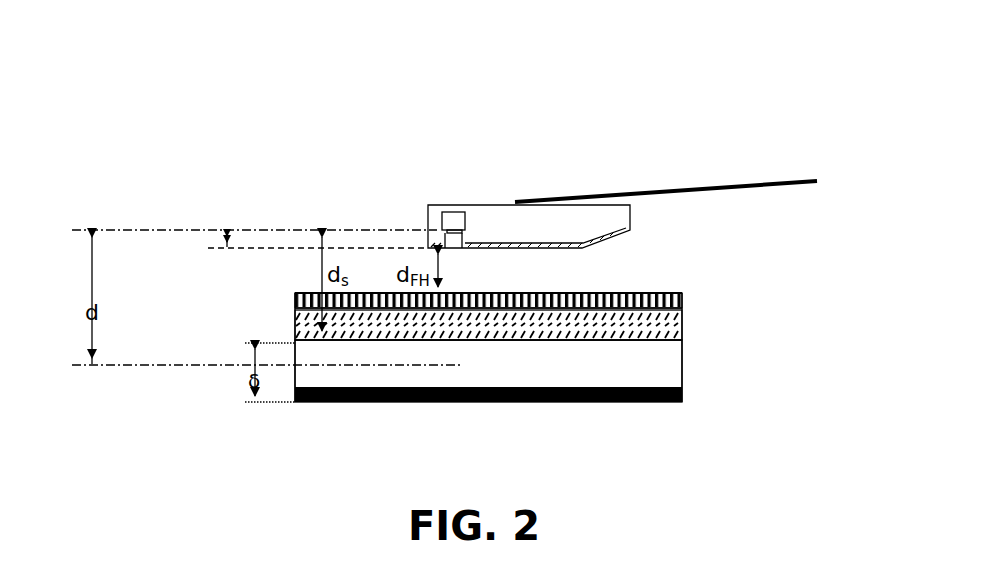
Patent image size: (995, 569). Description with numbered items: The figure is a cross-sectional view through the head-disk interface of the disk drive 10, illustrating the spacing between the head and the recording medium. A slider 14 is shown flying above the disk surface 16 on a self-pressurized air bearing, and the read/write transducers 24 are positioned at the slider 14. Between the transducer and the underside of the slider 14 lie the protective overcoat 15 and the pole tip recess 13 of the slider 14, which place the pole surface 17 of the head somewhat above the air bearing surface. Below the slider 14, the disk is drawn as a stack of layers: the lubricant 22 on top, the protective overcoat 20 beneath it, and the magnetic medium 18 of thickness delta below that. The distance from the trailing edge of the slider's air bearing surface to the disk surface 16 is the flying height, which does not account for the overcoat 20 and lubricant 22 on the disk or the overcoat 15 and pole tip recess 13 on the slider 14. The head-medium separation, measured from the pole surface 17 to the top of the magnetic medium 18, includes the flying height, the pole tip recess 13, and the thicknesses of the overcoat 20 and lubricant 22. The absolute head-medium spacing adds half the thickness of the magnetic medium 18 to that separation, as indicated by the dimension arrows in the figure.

The disk drive 10 is at (672, 89).
The pole tip recess 13 is at (226, 250).
The slider 14 is at (488, 205).
The protective overcoat 15 is at (633, 237).
The disk surface 16 is at (296, 277).
The pole surface 17 is at (452, 238).
The magnetic medium 18 is at (682, 383).
The protective overcoat 20 is at (682, 320).
The lubricant 22 is at (650, 293).
The read/write transducers 24 is at (457, 212).